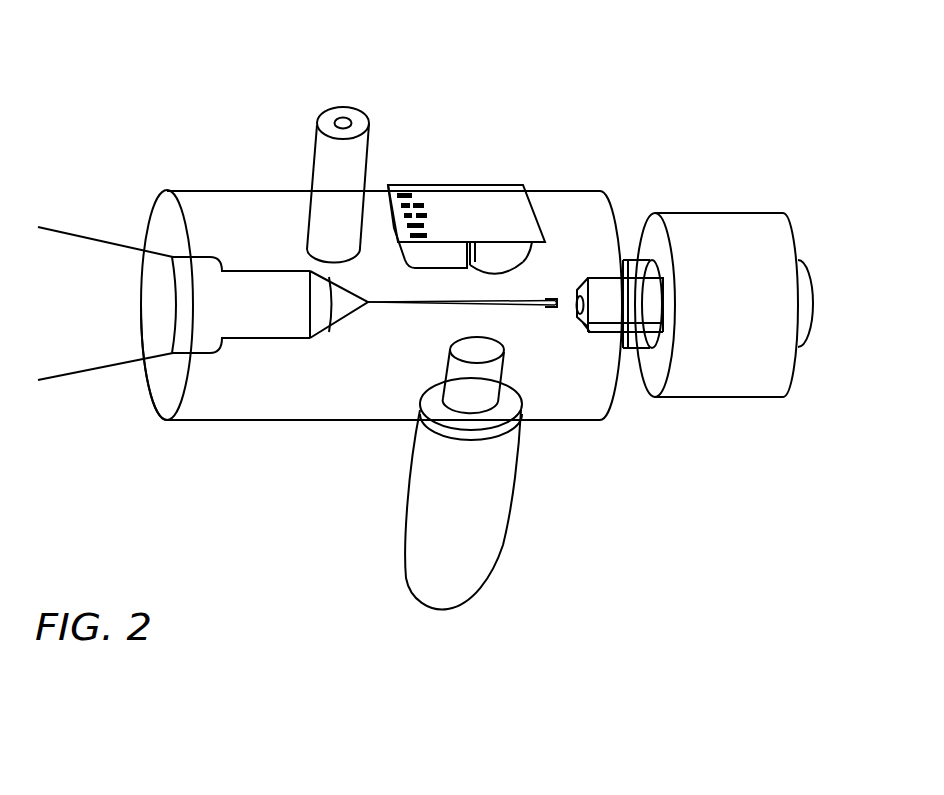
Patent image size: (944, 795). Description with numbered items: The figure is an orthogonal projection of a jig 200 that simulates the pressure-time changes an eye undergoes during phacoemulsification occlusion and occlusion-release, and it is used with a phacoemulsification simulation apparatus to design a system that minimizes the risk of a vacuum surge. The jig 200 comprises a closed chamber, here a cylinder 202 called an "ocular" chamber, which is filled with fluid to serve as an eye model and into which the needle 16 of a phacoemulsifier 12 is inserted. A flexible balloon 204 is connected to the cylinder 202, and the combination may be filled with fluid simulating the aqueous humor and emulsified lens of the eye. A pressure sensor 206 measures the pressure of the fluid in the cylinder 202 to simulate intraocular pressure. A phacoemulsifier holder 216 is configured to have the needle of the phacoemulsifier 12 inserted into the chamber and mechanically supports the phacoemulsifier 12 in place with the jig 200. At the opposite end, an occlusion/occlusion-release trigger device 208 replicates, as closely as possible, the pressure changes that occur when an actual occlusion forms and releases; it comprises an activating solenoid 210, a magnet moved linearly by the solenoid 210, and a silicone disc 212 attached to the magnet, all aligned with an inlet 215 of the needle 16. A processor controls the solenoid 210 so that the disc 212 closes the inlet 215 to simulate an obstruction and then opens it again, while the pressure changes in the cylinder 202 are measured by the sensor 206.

The jig 200 is at (177, 135).
The phacoemulsifier 12 is at (100, 313).
The needle 16 is at (383, 306).
The cylinder 202 is at (548, 190).
The flexible balloon 204 is at (442, 612).
The pressure sensor 206 is at (448, 185).
The occlusion/occlusion-release trigger device 208 is at (705, 465).
The activating solenoid 210 is at (720, 212).
The silicone disc 212 is at (578, 293).
The inlet 215 is at (557, 304).
The phacoemulsifier holder 216 is at (120, 420).